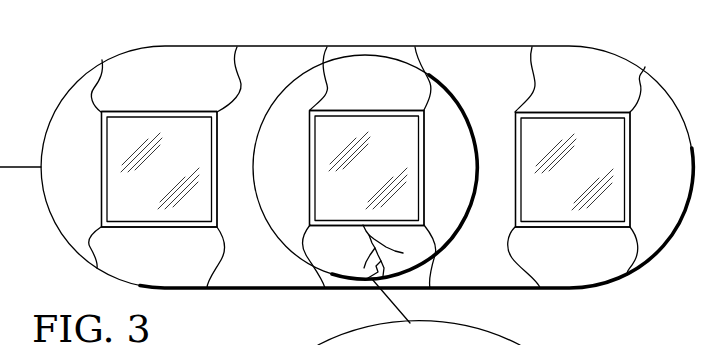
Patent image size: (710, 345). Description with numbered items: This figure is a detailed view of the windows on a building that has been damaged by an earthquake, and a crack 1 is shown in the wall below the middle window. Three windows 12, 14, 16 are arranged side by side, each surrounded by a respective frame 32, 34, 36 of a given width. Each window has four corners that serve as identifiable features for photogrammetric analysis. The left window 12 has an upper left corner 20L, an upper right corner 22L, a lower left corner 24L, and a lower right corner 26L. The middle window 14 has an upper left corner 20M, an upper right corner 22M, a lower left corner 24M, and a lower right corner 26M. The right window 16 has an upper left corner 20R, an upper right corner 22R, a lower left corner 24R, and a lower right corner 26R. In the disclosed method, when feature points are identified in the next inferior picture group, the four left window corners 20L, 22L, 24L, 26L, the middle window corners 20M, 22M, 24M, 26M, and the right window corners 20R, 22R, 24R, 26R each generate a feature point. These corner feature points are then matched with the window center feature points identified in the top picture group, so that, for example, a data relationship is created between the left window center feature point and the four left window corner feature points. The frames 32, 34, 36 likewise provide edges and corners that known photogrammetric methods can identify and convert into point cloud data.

The crack 1 is at (390, 251).
The window 12 is at (152, 111).
The window 14 is at (363, 110).
The window 16 is at (570, 112).
The left window upper left corner 20L is at (102, 60).
The left window upper right corner 22L is at (237, 47).
The middle window upper left corner 20M is at (327, 47).
The middle window upper right corner 22M is at (415, 47).
The right window upper left corner 20R is at (532, 47).
The right window upper right corner 22R is at (645, 67).
The left window lower left corner 24L is at (95, 267).
The left window lower right corner 26L is at (207, 288).
The middle window lower left corner 24M is at (325, 288).
The middle window lower right corner 26M is at (430, 288).
The right window lower left corner 24R is at (540, 288).
The right window lower right corner 26R is at (627, 275).
The frame 32 is at (101, 173).
The frame 34 is at (310, 173).
The frame 36 is at (630, 210).